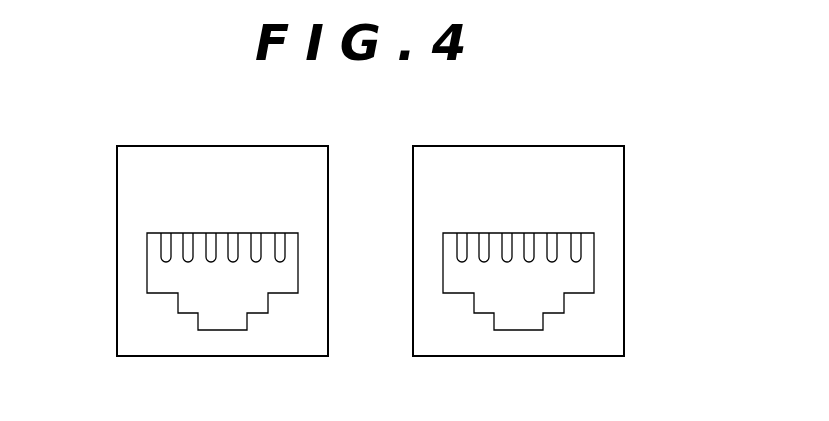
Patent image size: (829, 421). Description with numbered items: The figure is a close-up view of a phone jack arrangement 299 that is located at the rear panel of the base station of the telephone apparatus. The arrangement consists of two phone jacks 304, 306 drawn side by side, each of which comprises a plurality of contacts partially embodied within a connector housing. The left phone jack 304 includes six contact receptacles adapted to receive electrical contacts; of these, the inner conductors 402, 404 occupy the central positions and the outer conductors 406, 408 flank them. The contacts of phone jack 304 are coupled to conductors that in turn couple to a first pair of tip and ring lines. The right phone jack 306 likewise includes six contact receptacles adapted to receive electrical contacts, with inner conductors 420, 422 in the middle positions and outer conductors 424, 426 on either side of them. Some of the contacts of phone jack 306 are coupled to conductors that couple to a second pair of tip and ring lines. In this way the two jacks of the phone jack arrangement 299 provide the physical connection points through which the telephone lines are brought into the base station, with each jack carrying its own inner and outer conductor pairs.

The phone jack arrangement 299 is at (626, 100).
The phone jack 304 is at (156, 146).
The phone jack 306 is at (458, 146).
The inner conductor 402 is at (233, 262).
The inner conductor 404 is at (211, 262).
The outer conductor 406 is at (188, 262).
The outer conductor 408 is at (256, 260).
The inner conductor 420 is at (529, 262).
The inner conductor 422 is at (507, 262).
The outer conductor 424 is at (484, 262).
The outer conductor 426 is at (552, 260).